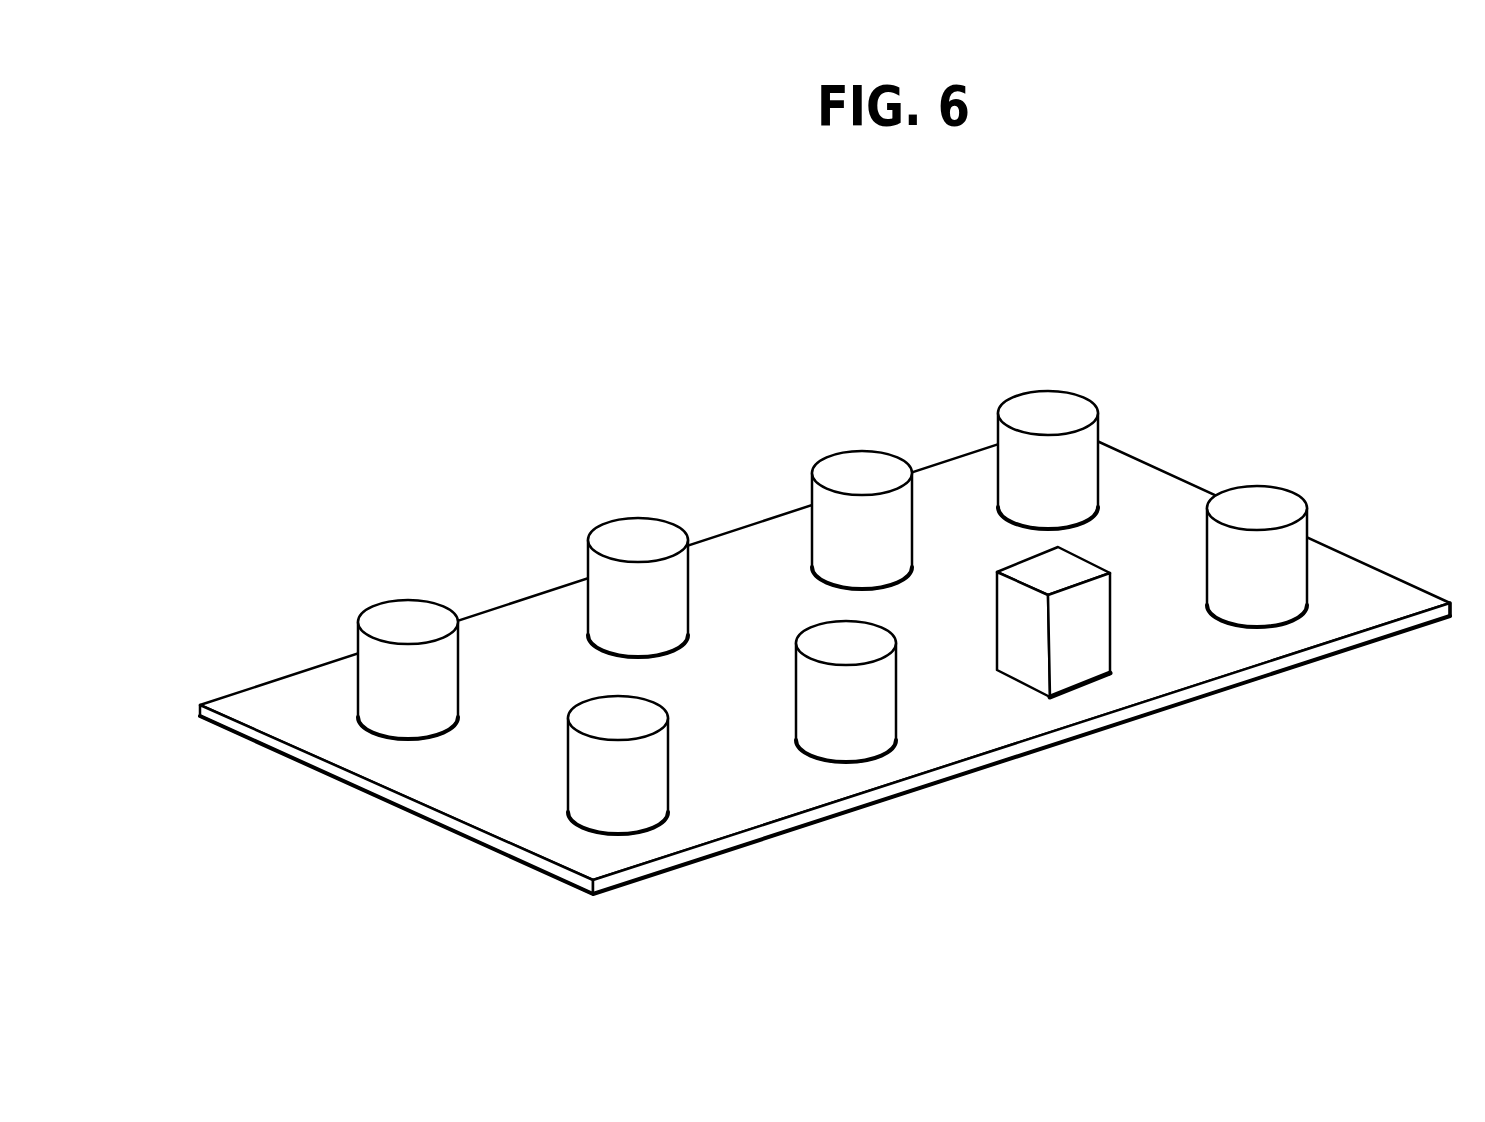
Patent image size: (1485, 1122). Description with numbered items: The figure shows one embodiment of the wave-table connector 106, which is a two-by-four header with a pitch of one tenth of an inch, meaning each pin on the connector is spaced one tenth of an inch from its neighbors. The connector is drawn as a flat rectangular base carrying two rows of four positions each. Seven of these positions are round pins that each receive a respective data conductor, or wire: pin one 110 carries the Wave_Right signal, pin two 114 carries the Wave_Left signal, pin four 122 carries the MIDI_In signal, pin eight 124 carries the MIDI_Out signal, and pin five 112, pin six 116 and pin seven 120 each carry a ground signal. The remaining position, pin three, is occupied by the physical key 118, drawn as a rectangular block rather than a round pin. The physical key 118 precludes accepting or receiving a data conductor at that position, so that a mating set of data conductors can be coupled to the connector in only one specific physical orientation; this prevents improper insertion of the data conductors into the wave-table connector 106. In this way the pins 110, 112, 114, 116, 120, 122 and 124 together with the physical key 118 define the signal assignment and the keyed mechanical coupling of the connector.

The wave-table connector 106 is at (1187, 523).
The pin 1 110 is at (653, 797).
The pin 5 112 is at (443, 699).
The pin 2 114 is at (877, 725).
The pin 6 116 is at (675, 624).
The physical key 118 is at (1098, 653).
The pin 7 120 is at (897, 551).
The pin 4 122 is at (1287, 591).
The pin 8 124 is at (1070, 495).